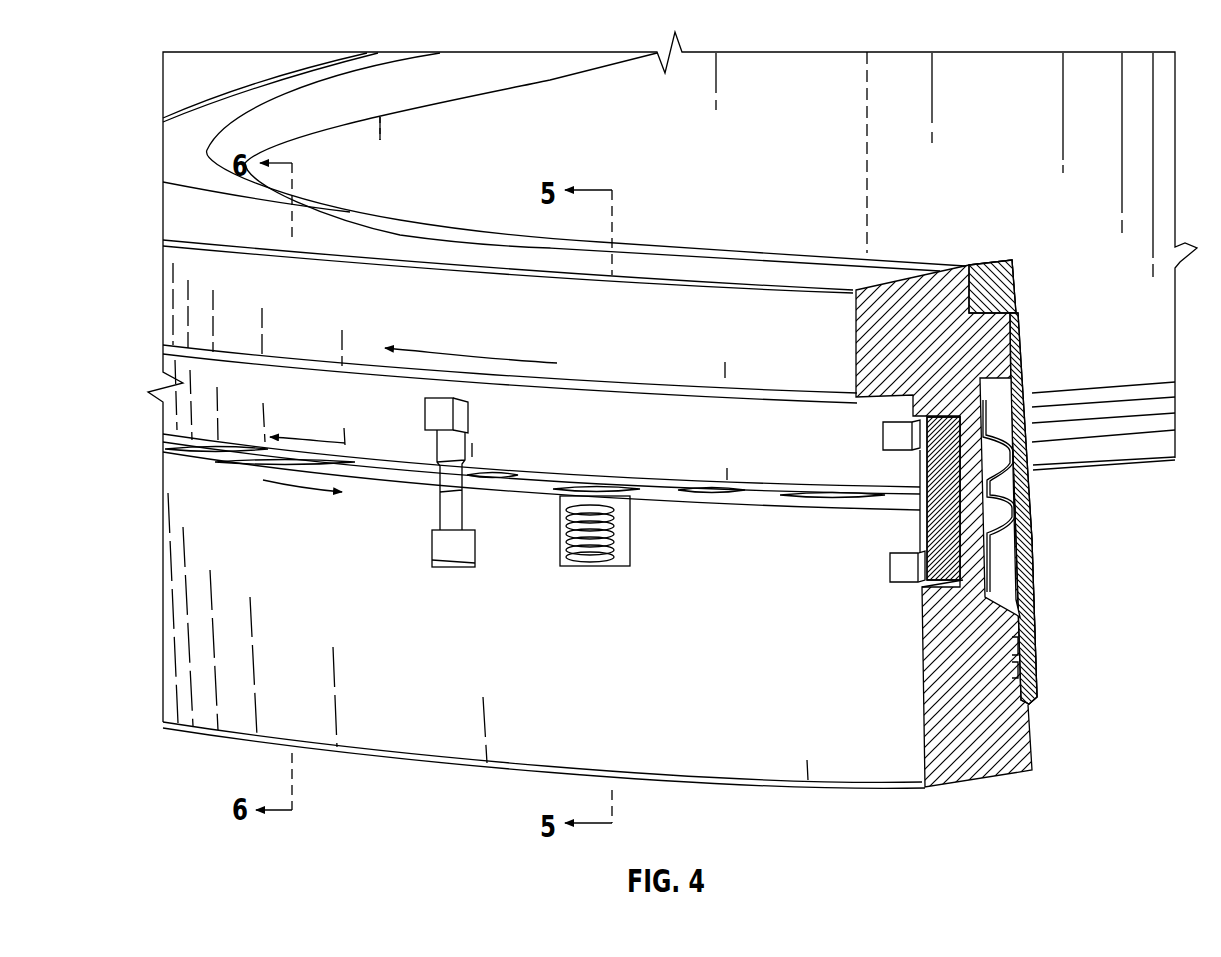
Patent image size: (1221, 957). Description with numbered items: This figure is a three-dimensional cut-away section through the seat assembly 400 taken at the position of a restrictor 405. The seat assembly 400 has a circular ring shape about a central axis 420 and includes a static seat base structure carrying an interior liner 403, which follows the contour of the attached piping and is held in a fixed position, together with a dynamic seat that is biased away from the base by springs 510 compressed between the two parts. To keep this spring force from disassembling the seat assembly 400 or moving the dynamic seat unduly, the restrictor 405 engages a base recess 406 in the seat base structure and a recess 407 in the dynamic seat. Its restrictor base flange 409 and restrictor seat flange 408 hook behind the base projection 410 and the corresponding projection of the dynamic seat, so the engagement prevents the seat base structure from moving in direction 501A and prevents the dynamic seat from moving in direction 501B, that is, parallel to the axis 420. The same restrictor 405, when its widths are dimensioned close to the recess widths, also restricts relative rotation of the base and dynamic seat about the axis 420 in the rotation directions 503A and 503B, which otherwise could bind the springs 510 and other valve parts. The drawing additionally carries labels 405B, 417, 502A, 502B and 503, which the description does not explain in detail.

The seat assembly 400 is at (1020, 183).
The interior liner 403 is at (1000, 288).
The restrictor 405 is at (927, 498).
The sliding bracket 405B is at (437, 548).
The base recess 406 is at (893, 432).
The recess 407 is at (893, 562).
The restrictor seat flange 408 is at (985, 580).
The restrictor base flange 409 is at (982, 407).
The base projection 410 is at (965, 455).
The spring clip lower contact 417 is at (967, 534).
The central axis 420 is at (867, 152).
The direction 501A is at (960, 372).
The direction 501B is at (997, 693).
The upper plate 502A is at (489, 463).
The lower plate 502B is at (489, 500).
The rotation direction 503 is at (497, 362).
The rotation direction 503A is at (293, 432).
The rotation direction 503B is at (292, 492).
The springs 510 is at (787, 497).